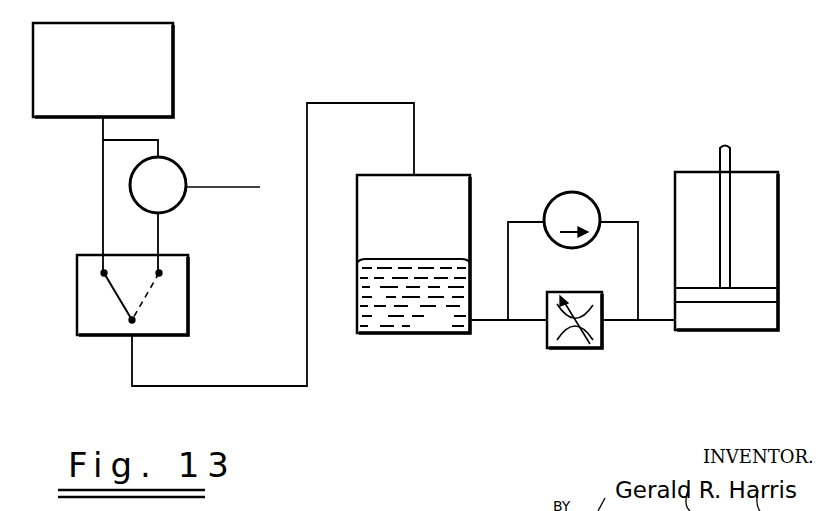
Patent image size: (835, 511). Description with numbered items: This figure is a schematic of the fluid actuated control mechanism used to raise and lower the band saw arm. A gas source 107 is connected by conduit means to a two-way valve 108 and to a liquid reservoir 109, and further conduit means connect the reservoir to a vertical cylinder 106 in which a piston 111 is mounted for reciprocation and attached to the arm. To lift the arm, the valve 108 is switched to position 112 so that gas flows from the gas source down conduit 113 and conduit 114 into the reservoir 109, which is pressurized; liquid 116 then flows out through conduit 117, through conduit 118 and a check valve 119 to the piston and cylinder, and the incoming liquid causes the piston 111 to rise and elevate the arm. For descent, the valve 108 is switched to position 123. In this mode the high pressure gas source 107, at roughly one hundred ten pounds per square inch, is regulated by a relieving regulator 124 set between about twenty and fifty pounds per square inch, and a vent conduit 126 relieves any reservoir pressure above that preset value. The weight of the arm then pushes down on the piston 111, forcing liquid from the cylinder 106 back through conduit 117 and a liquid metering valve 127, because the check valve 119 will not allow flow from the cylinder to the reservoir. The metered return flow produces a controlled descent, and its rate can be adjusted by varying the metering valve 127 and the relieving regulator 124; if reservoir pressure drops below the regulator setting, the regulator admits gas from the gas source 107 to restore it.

The vertical cylinder 106 is at (675, 207).
The gas source 107 is at (163, 45).
The valve 108 is at (177, 312).
The liquid reservoir 109 is at (473, 190).
The piston 111 is at (730, 158).
The valve position 112 is at (100, 277).
The conduit 113 is at (103, 168).
The conduit 114 is at (247, 389).
The liquid 116 is at (437, 313).
The conduit 117 is at (495, 322).
The conduit 118 is at (510, 276).
The check valve 119 is at (583, 242).
The valve position 123 is at (162, 273).
The relieving regulator 124 is at (168, 172).
The vent conduit 126 is at (260, 187).
The liquid metering valve 127 is at (563, 345).